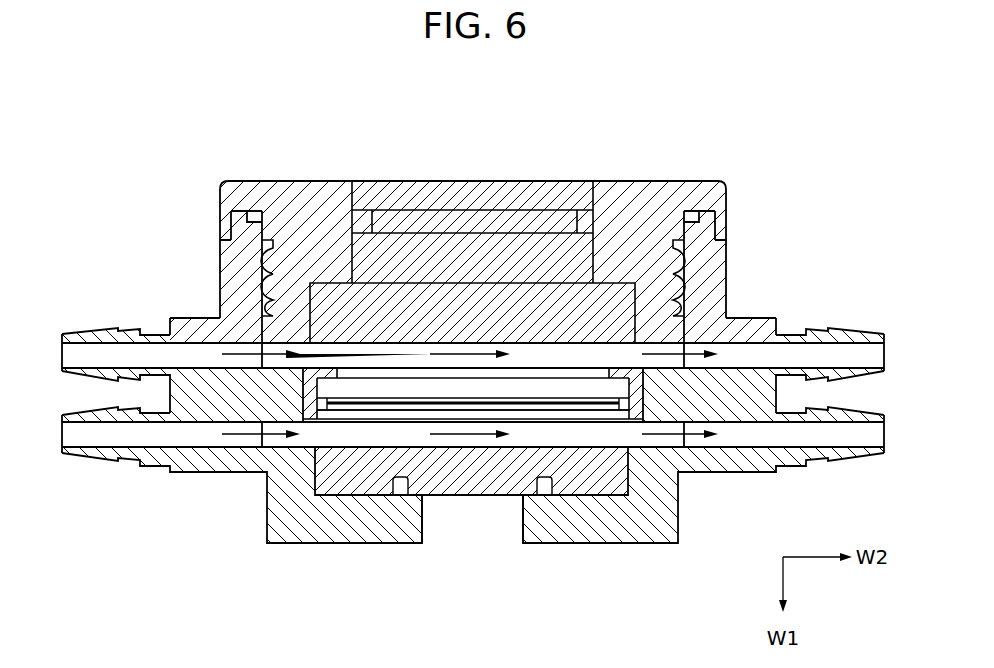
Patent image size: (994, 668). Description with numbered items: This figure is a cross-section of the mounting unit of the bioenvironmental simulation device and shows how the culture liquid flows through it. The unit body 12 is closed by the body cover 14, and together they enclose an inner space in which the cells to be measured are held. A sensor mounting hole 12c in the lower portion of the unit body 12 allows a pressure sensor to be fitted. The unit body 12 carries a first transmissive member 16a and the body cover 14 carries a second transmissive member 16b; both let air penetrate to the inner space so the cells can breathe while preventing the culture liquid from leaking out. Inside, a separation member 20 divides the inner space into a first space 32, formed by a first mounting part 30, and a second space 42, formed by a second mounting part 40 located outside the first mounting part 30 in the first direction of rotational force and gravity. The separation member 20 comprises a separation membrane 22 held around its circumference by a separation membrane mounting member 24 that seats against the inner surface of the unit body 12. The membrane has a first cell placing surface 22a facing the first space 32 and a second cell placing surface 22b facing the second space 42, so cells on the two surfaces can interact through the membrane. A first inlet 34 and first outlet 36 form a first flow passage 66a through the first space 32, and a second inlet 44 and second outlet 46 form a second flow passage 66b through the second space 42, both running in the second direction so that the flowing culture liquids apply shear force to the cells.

The unit body 12 is at (717, 303).
The sensor mounting hole 12c is at (520, 515).
The body cover 14 is at (647, 193).
The first transmissive member 16a is at (605, 490).
The second transmissive member 16b is at (540, 188).
The separation member 20 is at (295, 615).
The separation membrane 22 is at (360, 422).
The first cell placing surface 22a is at (465, 394).
The second cell placing surface 22b is at (533, 412).
The separation membrane mounting member 24 is at (303, 422).
The first mounting part 30 is at (350, 318).
The first space 32 is at (417, 356).
The first inlet 34 is at (98, 338).
The first outlet 36 is at (853, 336).
The second mounting part 40 is at (371, 463).
The second space 42 is at (592, 442).
The second inlet 44 is at (90, 452).
The second outlet 46 is at (850, 452).
The first flow passage 66a is at (168, 353).
The second flow passage 66b is at (165, 435).